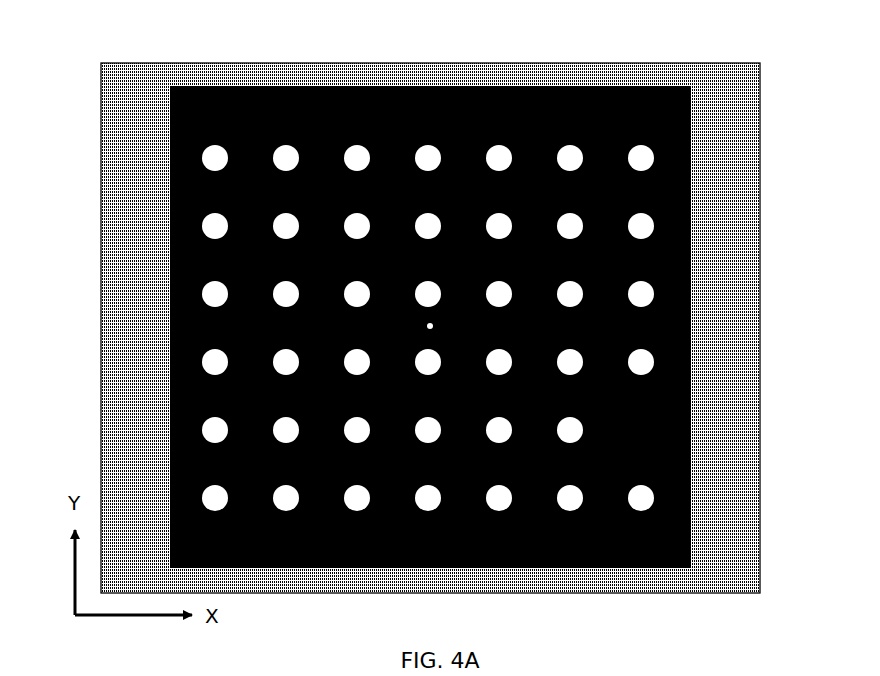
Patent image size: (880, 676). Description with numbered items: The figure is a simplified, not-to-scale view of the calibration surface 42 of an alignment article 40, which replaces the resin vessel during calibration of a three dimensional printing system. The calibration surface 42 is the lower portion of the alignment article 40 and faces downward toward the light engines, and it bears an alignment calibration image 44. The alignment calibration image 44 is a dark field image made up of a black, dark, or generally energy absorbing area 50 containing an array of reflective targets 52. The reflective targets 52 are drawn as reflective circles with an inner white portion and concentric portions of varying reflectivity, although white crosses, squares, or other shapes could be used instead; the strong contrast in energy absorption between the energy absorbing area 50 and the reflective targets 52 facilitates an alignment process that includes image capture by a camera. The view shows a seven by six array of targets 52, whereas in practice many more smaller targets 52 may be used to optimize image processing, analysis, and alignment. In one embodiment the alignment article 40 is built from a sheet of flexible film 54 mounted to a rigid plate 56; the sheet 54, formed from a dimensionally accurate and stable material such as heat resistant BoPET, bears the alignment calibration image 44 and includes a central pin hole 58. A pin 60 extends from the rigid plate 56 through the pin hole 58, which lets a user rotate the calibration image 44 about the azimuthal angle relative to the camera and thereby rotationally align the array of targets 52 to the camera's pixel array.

The alignment article 40 is at (472, 313).
The calibration surface 42 is at (728, 370).
The alignment calibration image 44 is at (702, 242).
The energy absorbing area 50 is at (683, 463).
The reflective targets 52 is at (635, 492).
The sheet of flexible film 54 is at (429, 327).
The rigid plate 56 is at (738, 160).
The central pin hole 58 is at (360, 304).
The pin 60 is at (305, 344).